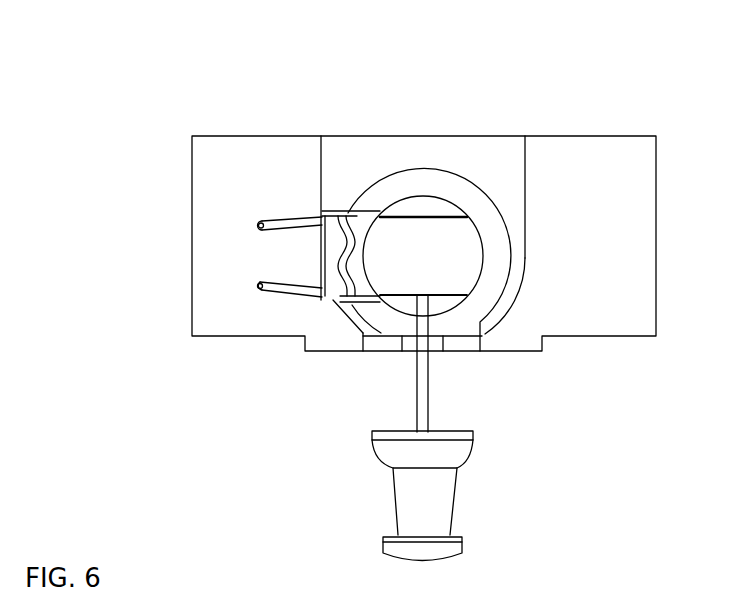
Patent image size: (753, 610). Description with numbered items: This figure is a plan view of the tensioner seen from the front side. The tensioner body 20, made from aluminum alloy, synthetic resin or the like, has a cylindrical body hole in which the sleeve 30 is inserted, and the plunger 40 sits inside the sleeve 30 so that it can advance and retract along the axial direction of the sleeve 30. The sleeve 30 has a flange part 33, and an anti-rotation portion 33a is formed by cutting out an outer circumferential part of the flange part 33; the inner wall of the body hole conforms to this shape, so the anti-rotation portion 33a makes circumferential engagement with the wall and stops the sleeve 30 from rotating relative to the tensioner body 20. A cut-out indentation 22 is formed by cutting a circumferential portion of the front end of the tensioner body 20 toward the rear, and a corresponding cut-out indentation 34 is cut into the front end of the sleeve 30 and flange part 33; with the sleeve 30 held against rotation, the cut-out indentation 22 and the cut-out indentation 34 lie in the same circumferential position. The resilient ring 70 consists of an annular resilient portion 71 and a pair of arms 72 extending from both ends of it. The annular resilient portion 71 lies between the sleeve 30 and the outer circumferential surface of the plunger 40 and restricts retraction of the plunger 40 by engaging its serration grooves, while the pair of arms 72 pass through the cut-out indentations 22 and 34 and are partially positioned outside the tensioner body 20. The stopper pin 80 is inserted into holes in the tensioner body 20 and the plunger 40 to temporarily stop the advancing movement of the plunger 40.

The tensioner body 20 is at (633, 328).
The cut-out indentation 22 is at (337, 306).
The sleeve 30 is at (493, 260).
The flange part 33 is at (488, 202).
The anti-rotation portion 33a is at (448, 338).
The cut-out indentation 34 is at (366, 249).
The plunger 40 is at (448, 248).
The resilient ring 70 is at (282, 58).
The annular resilient portion 71 is at (360, 210).
The pair of arms 72 is at (291, 284).
The stopper pin 80 is at (430, 497).